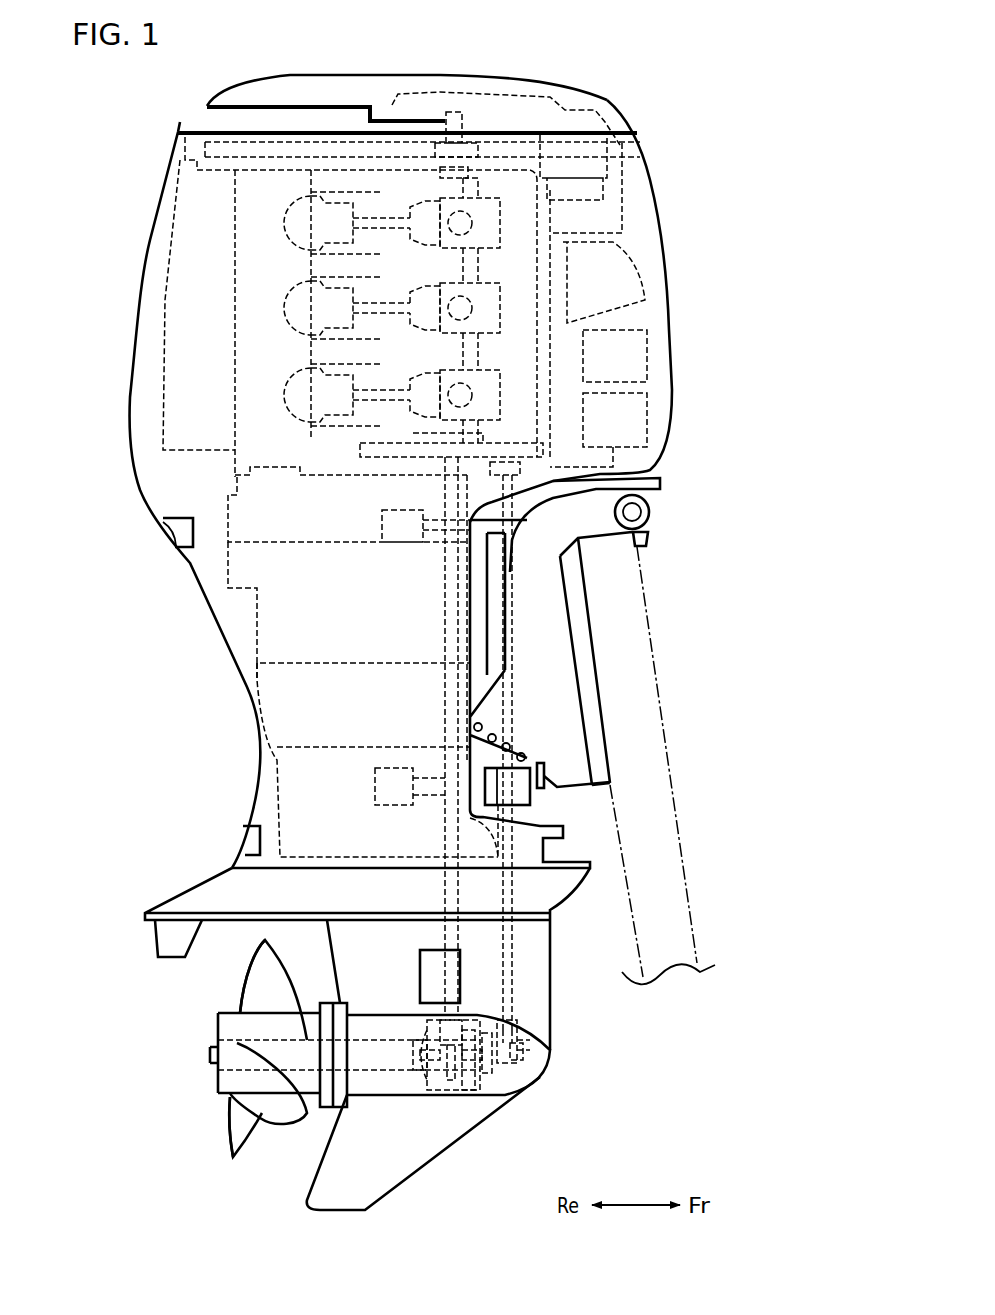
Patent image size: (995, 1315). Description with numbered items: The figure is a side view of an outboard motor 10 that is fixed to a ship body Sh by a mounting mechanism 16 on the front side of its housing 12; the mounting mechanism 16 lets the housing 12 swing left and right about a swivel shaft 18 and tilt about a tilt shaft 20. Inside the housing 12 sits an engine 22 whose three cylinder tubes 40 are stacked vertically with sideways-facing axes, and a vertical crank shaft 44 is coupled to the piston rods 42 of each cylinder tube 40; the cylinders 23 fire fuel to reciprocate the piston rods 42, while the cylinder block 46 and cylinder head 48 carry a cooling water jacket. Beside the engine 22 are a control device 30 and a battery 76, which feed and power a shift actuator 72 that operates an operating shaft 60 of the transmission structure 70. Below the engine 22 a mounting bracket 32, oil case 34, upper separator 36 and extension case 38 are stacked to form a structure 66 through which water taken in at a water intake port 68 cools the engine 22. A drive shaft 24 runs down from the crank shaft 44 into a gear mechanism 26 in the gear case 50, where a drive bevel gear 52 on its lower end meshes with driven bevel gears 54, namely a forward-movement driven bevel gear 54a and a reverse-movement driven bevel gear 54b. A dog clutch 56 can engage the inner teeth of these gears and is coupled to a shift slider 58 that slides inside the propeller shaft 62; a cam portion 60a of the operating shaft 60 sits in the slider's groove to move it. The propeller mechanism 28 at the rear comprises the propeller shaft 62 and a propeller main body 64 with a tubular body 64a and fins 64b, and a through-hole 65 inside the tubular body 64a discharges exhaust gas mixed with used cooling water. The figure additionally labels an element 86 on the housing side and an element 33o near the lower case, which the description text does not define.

The outboard motor 10 is at (550, 50).
The housing 12 is at (146, 179).
The engine 22 is at (644, 233).
The cylinders 23 is at (275, 223).
The cylinder tubes 40 is at (316, 193).
The piston rods 42 is at (356, 213).
The crank shaft 44 is at (508, 388).
The cylinder block 46 is at (235, 432).
The cylinder head 48 is at (163, 356).
The battery 76 is at (650, 354).
The control device 30 is at (650, 414).
The mounting mechanism 16 is at (652, 511).
The tilt shaft 20 is at (648, 536).
The shift actuator 72 is at (518, 484).
The transmission structure 70 is at (557, 821).
The mounting bracket 32 is at (228, 497).
The air intake 86 is at (168, 533).
The oil case 34 is at (228, 580).
The structure 66 is at (242, 611).
The drive shaft 24 is at (445, 585).
The swivel shaft 18 is at (530, 672).
The upper separator 36 is at (252, 693).
The extension case 38 is at (280, 785).
The outlet opening 33o is at (248, 852).
The ship body Sh is at (683, 856).
The operating shaft 60 is at (514, 897).
The water intake port 68 is at (420, 963).
The gear case 50 is at (552, 1010).
The drive bevel gear 52 is at (463, 1020).
The dog clutch 56 is at (425, 1035).
The shift slider 58 is at (500, 1070).
The cam portion 60a is at (523, 1058).
The gear mechanism 26 is at (483, 1105).
The driven bevel gears 54 is at (434, 1122).
The forward-movement driven bevel gear 54a is at (413, 1058).
The reverse-movement driven bevel gear 54b is at (465, 1098).
The propeller shaft 62 is at (373, 1068).
The through-hole 65 is at (232, 1030).
The propeller mechanism 28 is at (224, 1168).
The propeller main body 64 is at (150, 1093).
The tubular body 64a is at (230, 1092).
The fins 64b is at (232, 1133).